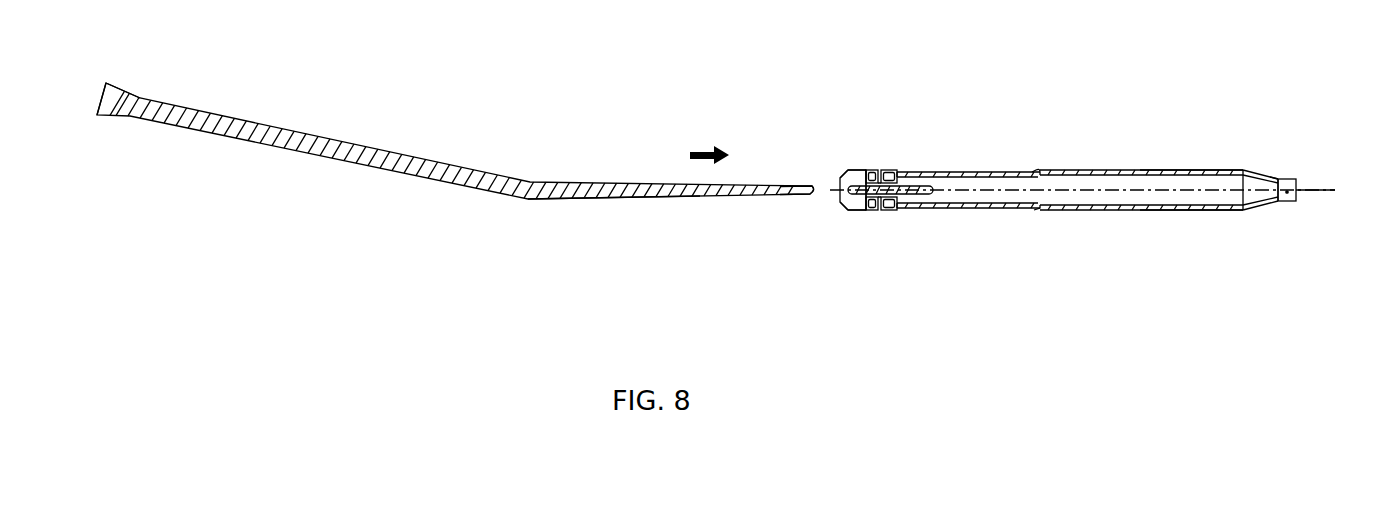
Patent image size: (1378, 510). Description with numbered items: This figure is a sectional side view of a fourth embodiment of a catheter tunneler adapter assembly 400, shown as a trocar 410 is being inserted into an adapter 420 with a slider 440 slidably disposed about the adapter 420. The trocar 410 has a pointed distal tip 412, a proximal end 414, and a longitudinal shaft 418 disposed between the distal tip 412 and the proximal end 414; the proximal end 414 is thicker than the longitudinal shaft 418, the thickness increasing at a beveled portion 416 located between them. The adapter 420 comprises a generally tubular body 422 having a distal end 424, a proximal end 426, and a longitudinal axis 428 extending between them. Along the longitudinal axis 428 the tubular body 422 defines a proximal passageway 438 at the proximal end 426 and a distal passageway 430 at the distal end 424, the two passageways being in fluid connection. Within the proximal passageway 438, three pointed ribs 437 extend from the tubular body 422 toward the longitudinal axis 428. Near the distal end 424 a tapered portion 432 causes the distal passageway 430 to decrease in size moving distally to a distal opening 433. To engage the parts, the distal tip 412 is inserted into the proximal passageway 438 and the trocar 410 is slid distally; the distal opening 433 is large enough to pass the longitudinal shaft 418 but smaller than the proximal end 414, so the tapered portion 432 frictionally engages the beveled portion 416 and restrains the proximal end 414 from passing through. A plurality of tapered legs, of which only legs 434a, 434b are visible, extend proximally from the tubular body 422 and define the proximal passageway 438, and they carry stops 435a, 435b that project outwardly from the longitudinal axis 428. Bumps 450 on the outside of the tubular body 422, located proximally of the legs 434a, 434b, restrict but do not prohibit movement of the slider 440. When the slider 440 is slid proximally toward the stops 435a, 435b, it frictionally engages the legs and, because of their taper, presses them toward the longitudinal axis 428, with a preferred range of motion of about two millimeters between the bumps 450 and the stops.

The catheter tunneler adapter assembly 400 is at (712, 98).
The trocar 410 is at (610, 230).
The distal tip 412 is at (808, 200).
The proximal end 414 is at (99, 93).
The beveled portion 416 is at (124, 84).
The longitudinal shaft 418 is at (557, 201).
The adapter 420 is at (1100, 171).
The generally tubular body 422 is at (1152, 209).
The distal end 424 is at (1295, 174).
The proximal end 426 is at (843, 164).
The longitudinal axis 428 is at (1302, 196).
The distal passageway 430 is at (1287, 193).
The tapered portion 432 is at (1268, 209).
The distal opening 433 is at (1300, 182).
The leg 434a is at (857, 168).
The leg 434b is at (853, 212).
The stop 435a is at (847, 166).
The stop 435b is at (845, 212).
The rib 437 is at (866, 211).
The proximal passageway 438 is at (840, 176).
The slider 440 is at (893, 176).
The bumps 450 is at (1040, 211).